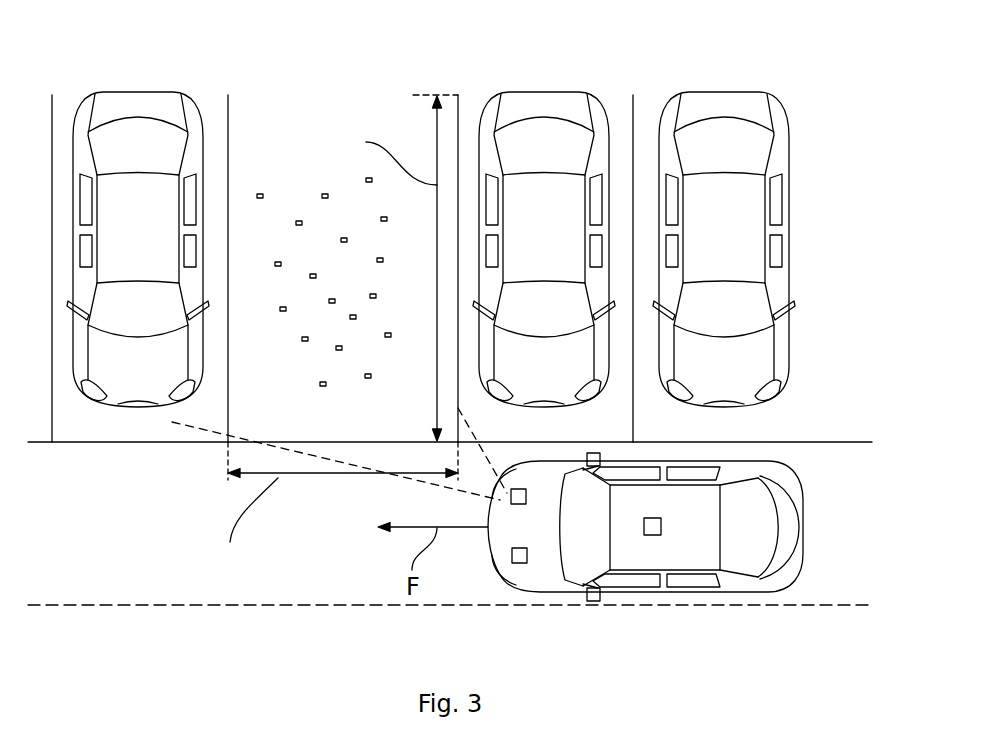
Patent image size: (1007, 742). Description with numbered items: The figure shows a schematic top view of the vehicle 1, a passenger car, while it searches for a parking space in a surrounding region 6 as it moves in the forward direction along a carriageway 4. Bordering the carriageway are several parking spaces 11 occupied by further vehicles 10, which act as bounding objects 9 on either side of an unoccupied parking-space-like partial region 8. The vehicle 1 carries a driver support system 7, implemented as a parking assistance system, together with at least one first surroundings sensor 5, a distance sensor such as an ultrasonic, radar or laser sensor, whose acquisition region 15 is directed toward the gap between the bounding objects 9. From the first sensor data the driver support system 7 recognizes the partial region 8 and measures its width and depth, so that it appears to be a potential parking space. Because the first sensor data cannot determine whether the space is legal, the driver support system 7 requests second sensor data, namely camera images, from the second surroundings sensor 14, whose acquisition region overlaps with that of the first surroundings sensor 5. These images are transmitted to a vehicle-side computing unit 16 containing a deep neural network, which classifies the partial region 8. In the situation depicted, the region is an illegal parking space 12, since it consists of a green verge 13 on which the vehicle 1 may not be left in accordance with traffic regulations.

The vehicle 1 is at (487, 544).
The carriageway 4 is at (135, 530).
The first surroundings sensor 5 is at (518, 488).
The surrounding region 6 is at (817, 283).
The driver support system 7 is at (672, 547).
The parking-space-like partial region 8 is at (317, 110).
The bounding objects 9 is at (102, 90).
The further vehicles 10 is at (144, 108).
The parking spaces 11 is at (66, 435).
The illegal parking space 12 is at (266, 395).
The green verge 13 is at (297, 180).
The second surroundings sensor 14 is at (602, 458).
The acquisition region 15 is at (400, 478).
The vehicle-side computing unit 16 is at (653, 536).